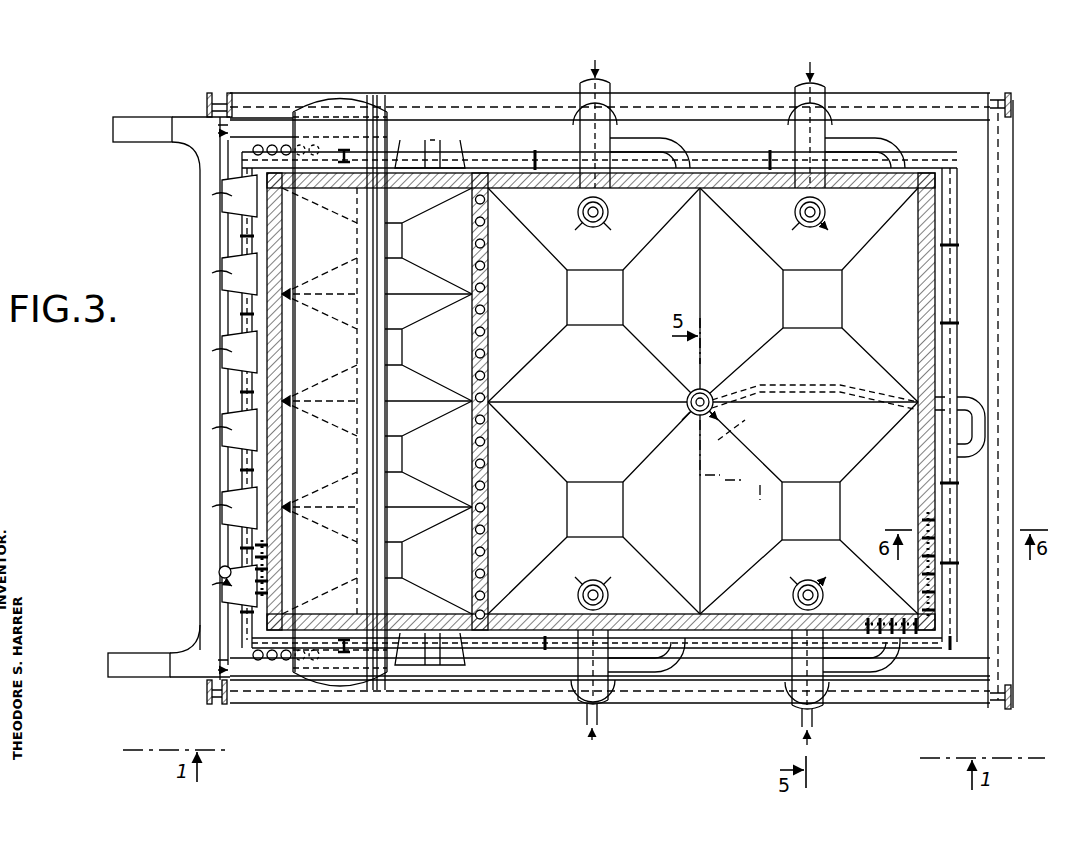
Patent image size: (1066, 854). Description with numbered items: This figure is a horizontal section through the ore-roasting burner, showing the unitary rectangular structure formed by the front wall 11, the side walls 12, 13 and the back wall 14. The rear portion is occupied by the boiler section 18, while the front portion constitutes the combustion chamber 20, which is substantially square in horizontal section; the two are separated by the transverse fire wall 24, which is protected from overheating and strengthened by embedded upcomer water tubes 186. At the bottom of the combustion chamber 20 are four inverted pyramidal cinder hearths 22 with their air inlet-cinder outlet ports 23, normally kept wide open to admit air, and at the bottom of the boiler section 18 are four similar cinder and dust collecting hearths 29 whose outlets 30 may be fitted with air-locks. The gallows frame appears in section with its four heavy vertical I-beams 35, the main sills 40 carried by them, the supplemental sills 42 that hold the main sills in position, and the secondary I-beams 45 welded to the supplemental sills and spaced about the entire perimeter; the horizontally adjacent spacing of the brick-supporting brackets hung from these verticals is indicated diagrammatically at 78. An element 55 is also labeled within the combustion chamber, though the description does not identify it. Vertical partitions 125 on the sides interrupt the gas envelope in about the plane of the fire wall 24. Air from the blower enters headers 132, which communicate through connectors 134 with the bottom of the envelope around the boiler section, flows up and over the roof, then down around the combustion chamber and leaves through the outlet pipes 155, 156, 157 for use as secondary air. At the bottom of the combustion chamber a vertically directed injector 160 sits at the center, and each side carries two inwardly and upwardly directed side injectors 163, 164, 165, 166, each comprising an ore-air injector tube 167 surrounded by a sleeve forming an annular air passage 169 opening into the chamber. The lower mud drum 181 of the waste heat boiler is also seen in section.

The front wall 11 is at (960, 363).
The side wall 12 is at (524, 142).
The side wall 13 is at (715, 662).
The back wall 14 is at (240, 396).
The boiler section 18 is at (486, 332).
The combustion chamber 20 is at (895, 290).
The cinder hearths 22 is at (895, 475).
The air inlet-cinder outlet ports 23 is at (703, 401).
The fire wall 24 is at (486, 462).
The cinder and dust collecting hearths 29 is at (486, 526).
The outlets 30 is at (402, 345).
The vertical I-beams 35 is at (209, 95).
The main sills 40 is at (690, 100).
The supplemental sills 42 is at (222, 532).
The secondary I-beams 45 is at (762, 160).
The upper spray nozzle 55 is at (652, 190).
The horizontal spacing of brackets 78 is at (240, 570).
The vertical partitions 125 is at (482, 173).
The headers 132 is at (130, 117).
The connectors 134 is at (432, 138).
The outlet pipe 155 is at (645, 672).
The outlet pipe 156 is at (668, 145).
The outlet pipe 157 is at (970, 432).
The injector 160 is at (688, 397).
The side injector 163 is at (585, 706).
The side injector 164 is at (795, 700).
The side injector 165 is at (600, 128).
The side injector 166 is at (820, 128).
The ore-air injector tube 167 is at (815, 725).
The annular air passage 169 is at (610, 597).
The mud drum 181 is at (340, 105).
The upcomer water tubes 186 is at (486, 262).